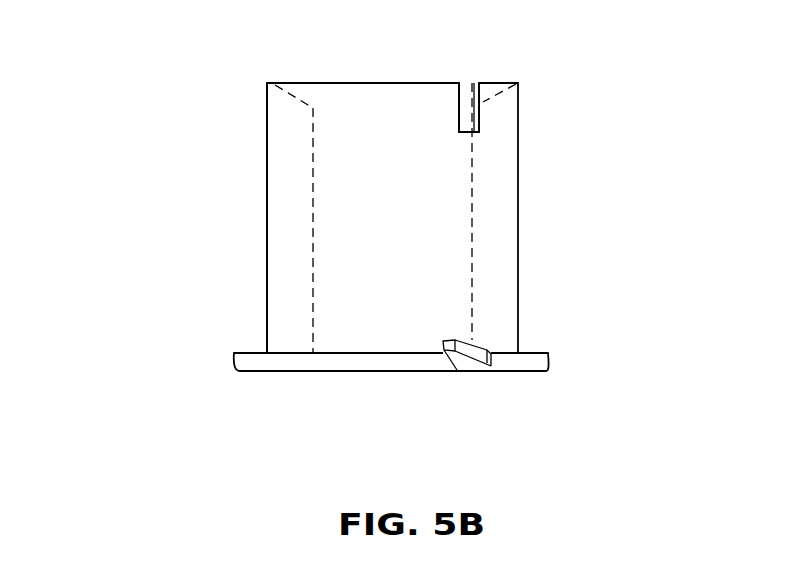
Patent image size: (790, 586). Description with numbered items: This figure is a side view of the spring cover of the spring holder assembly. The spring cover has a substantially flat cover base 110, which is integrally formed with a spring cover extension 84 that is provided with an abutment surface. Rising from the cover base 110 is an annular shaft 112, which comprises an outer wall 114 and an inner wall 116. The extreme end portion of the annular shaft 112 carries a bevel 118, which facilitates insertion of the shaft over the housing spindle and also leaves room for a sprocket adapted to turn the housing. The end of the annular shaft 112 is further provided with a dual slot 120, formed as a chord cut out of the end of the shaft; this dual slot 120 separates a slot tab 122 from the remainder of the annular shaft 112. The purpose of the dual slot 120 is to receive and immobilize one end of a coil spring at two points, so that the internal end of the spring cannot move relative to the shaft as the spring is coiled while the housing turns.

The spring cover extension 84 is at (465, 362).
The cover base 110 is at (532, 363).
The annular shaft 112 is at (248, 179).
The outer wall 114 is at (267, 243).
The inner wall 116 is at (472, 199).
The bevel 118 is at (300, 97).
The dual slot 120 is at (467, 98).
The slot tab 122 is at (498, 97).